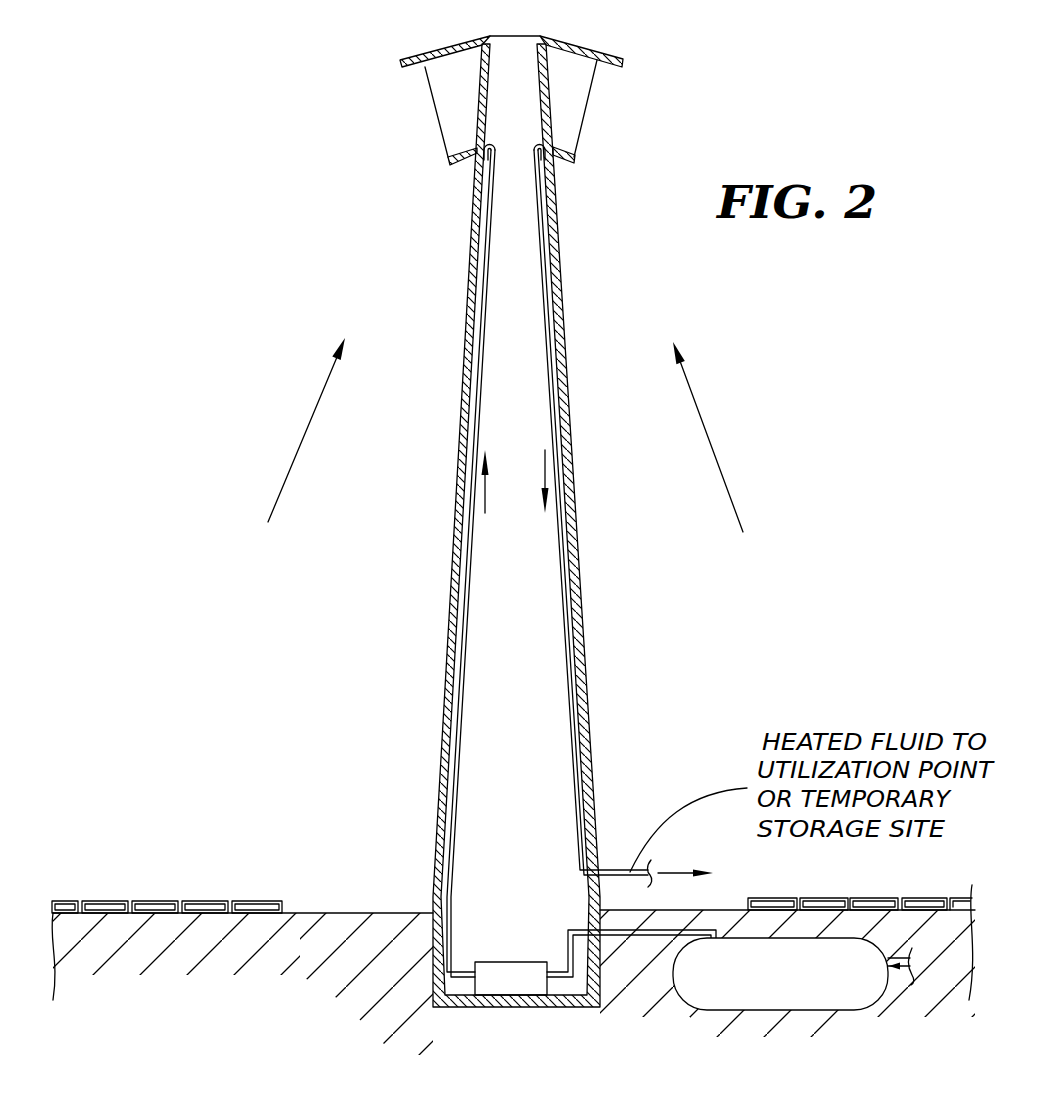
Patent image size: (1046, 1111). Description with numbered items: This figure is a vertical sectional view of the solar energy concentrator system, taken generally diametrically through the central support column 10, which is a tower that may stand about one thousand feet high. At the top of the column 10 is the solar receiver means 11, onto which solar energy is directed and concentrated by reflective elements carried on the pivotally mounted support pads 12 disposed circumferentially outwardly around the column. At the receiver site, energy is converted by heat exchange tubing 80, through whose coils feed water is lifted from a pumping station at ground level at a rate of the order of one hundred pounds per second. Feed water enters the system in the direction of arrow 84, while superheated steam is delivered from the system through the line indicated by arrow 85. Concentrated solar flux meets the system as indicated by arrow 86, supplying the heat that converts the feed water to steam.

The column 10 is at (657, 520).
The solar receiver means 11 is at (646, 61).
The support pads 12 is at (238, 875).
The heat exchange tubing 80 is at (587, 111).
The feed water inlet arrow 84 is at (488, 297).
The superheated steam delivery arrow 85 is at (545, 387).
The concentrated flux arrow 86 is at (282, 483).